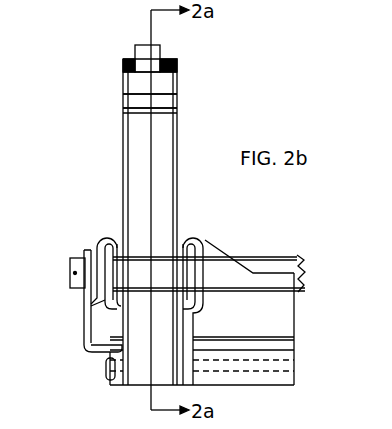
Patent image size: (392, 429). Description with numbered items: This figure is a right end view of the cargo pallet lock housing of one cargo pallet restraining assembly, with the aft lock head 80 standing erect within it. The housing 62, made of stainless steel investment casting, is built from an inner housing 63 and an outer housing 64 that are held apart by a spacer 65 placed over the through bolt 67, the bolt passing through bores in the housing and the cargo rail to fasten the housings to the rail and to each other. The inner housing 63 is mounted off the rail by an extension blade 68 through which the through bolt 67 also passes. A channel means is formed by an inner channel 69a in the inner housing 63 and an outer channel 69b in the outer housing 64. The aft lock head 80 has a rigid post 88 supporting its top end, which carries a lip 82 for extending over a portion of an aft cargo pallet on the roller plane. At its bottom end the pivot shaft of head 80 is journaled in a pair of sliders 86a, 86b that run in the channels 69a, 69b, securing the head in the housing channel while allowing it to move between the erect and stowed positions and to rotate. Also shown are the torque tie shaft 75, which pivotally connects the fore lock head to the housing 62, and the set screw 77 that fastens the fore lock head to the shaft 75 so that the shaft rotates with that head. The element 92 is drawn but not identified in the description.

The housing 62 is at (235, 208).
The inner housing 63 is at (238, 385).
The outer housing 64 is at (141, 283).
The spacer 65 is at (108, 345).
The through bolt 67 is at (106, 372).
The extension blade 68 is at (287, 312).
The inner channel 69a is at (207, 240).
The outer channel 69b is at (100, 307).
The torque tie shaft 75 is at (300, 262).
The set screw 77 is at (100, 352).
The aft lock head 80 is at (117, 152).
The lip 82 is at (167, 104).
The slider 86a is at (120, 232).
The slider 86b is at (186, 237).
The rigid post 88 is at (166, 134).
The end cap 92 is at (157, 56).